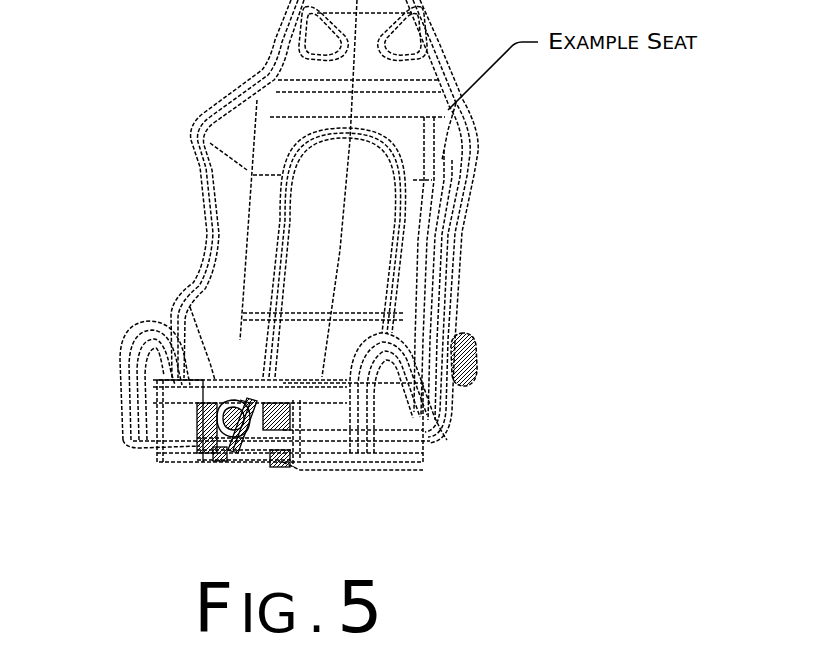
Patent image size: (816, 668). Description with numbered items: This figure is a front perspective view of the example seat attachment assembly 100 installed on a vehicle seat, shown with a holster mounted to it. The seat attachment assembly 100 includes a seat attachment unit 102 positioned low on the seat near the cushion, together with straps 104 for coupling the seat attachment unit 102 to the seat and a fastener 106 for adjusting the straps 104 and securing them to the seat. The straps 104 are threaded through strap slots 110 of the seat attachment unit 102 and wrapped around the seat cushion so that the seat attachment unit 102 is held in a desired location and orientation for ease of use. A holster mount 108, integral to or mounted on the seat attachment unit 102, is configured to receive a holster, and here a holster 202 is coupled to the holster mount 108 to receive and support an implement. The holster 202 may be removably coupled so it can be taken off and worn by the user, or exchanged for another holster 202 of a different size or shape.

The seat attachment assembly 100 is at (496, 304).
The seat attachment unit 102 is at (288, 413).
The strap 104 is at (207, 380).
The fastener 106 is at (207, 448).
The holster mount 108 is at (282, 423).
The strap slot 110 is at (197, 417).
The holster 202 is at (230, 453).